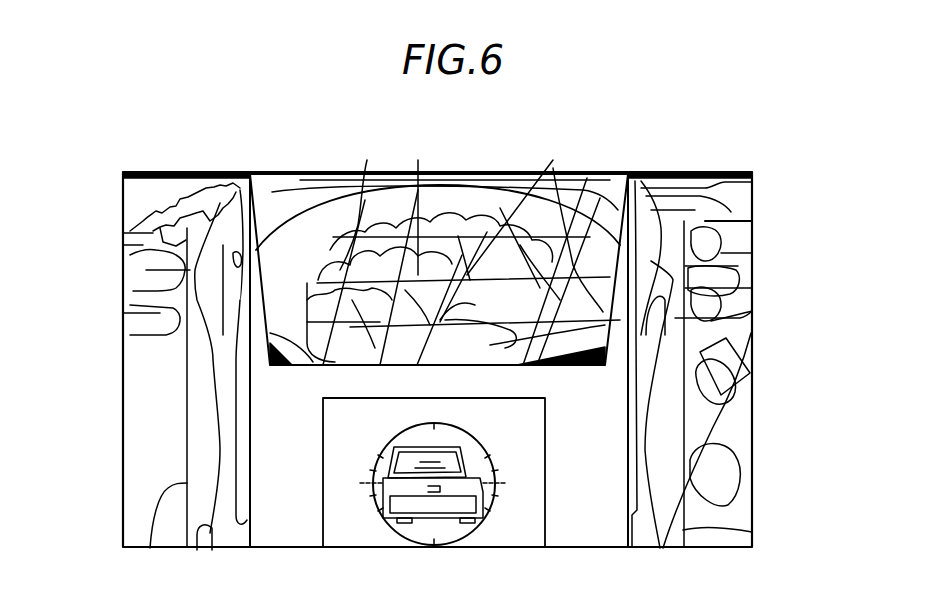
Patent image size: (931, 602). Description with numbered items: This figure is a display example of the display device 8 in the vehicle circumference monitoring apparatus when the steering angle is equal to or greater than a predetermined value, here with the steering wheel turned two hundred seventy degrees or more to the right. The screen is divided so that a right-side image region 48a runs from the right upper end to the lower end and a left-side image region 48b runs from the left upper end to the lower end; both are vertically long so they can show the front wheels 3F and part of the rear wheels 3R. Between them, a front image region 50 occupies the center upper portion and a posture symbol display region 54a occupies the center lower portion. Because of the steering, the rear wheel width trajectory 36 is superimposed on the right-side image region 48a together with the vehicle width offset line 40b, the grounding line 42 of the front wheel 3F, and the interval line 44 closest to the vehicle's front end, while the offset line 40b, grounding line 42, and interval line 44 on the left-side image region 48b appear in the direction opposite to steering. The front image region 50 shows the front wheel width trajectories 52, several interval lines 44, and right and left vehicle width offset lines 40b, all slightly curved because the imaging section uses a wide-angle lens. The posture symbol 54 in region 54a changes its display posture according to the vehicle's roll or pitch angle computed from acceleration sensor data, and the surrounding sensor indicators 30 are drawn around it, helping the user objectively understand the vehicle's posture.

The display device 8 is at (180, 167).
The front image region 50 is at (295, 184).
The vehicle width offset line 40b is at (779, 532).
The interval line 44 is at (776, 241).
The front wheel width trajectory 52 is at (556, 149).
The front wheel 3F is at (200, 303).
The grounding line 42 is at (183, 335).
The rear wheel width trajectory 36 is at (745, 352).
The right-side image region 48a is at (742, 426).
The left-side image region 48b is at (133, 484).
The rear wheel 3R is at (200, 548).
The posture symbol display region 54a is at (338, 553).
The posture symbol 54 is at (453, 508).
The ultrasonic sensor indicator 30 is at (453, 532).